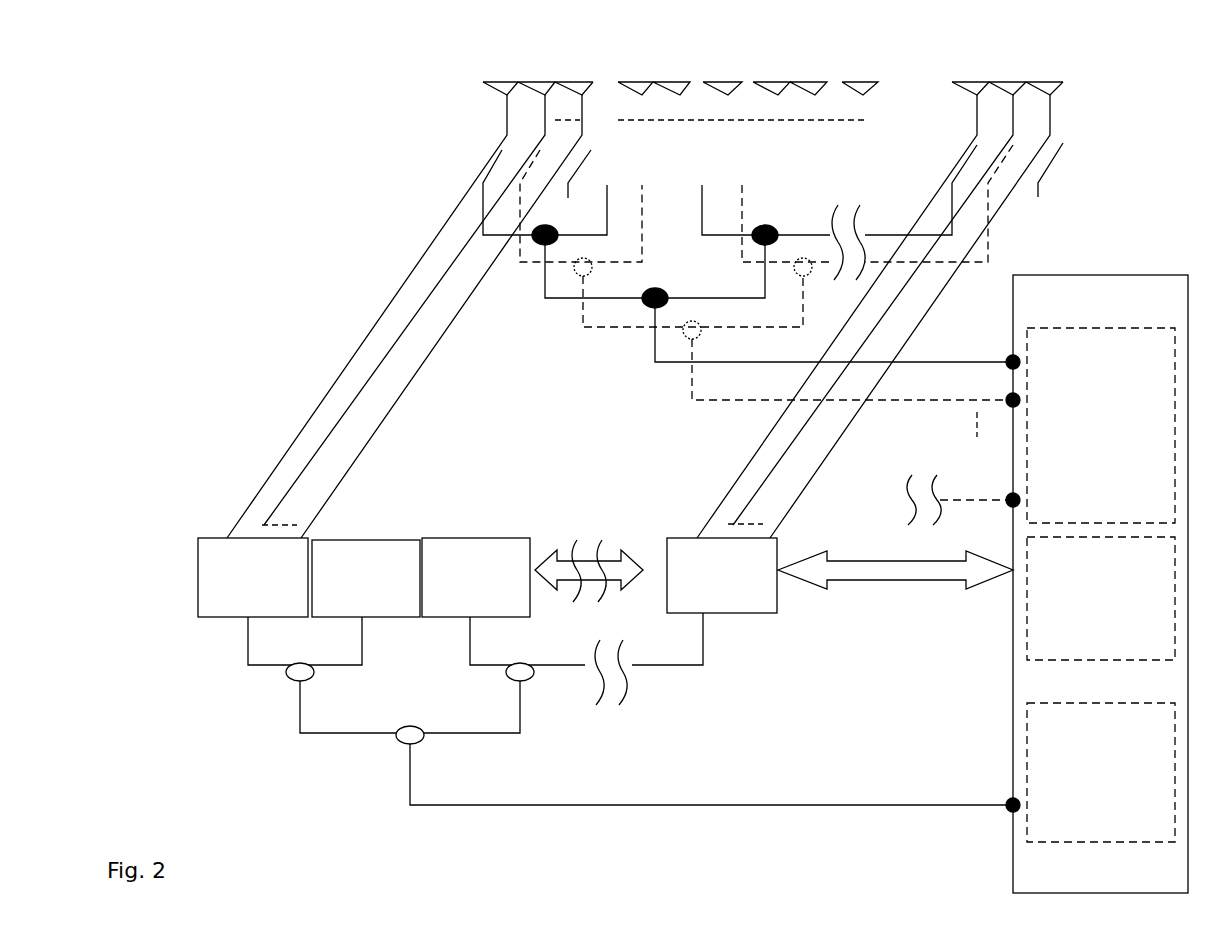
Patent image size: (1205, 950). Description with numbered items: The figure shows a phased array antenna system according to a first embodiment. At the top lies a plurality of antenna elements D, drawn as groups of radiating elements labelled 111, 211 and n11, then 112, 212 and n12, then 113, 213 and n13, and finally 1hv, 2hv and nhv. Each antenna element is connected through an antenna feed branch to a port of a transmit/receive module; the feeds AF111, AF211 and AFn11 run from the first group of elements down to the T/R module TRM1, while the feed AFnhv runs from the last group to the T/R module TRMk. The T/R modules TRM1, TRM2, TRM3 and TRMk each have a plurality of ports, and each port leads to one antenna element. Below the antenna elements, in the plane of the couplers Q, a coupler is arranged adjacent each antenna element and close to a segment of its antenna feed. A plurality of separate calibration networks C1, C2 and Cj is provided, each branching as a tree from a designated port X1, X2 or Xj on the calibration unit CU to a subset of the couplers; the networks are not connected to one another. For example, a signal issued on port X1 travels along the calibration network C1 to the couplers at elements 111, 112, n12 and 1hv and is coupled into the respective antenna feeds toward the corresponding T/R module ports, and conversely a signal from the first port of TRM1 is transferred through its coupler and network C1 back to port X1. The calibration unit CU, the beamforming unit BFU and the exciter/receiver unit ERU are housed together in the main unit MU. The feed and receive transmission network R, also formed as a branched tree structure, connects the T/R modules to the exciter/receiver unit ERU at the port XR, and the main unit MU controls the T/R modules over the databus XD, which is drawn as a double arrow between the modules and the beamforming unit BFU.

The antenna elements D is at (469, 22).
The coupler Q is at (456, 147).
The antenna element / coupler 111 is at (417, 286).
The antenna element / coupler 211 is at (453, 280).
The antenna element / coupler n11 is at (451, 286).
The antenna element / coupler 112 is at (623, 109).
The antenna element / coupler 212 is at (663, 109).
The antenna element / coupler n12 is at (753, 135).
The antenna element / coupler 113 is at (774, 148).
The antenna element / coupler 213 is at (811, 65).
The antenna element / coupler n13 is at (860, 65).
The antenna element / coupler 1hv is at (843, 286).
The antenna element / coupler 2hv is at (879, 280).
The antenna element / coupler nhv is at (919, 286).
The antenna feed branch AF111 is at (340, 354).
The antenna feed branch AF211 is at (415, 354).
The antenna feed branch AFn11 is at (482, 354).
The antenna feed branch AFnhv is at (899, 352).
The calibration network C1 is at (834, 335).
The calibration network C2 is at (852, 369).
The calibration network Cj is at (960, 499).
The main unit MU is at (983, 584).
The calibration unit CU is at (1090, 425).
The beamforming unit BFU is at (976, 598).
The exciter/receiver unit ERU is at (1090, 772).
The calibration unit port X1 is at (1034, 363).
The calibration unit port X2 is at (1034, 400).
The calibration unit port Xj is at (1031, 501).
The databus XD is at (922, 570).
The transmission network port XR is at (1036, 806).
The feed and receive transmission network R is at (630, 709).
The T/R module TRM1 is at (253, 577).
The T/R module TRM2 is at (366, 578).
The T/R module TRM3 is at (476, 577).
The T/R module TRMk is at (722, 575).